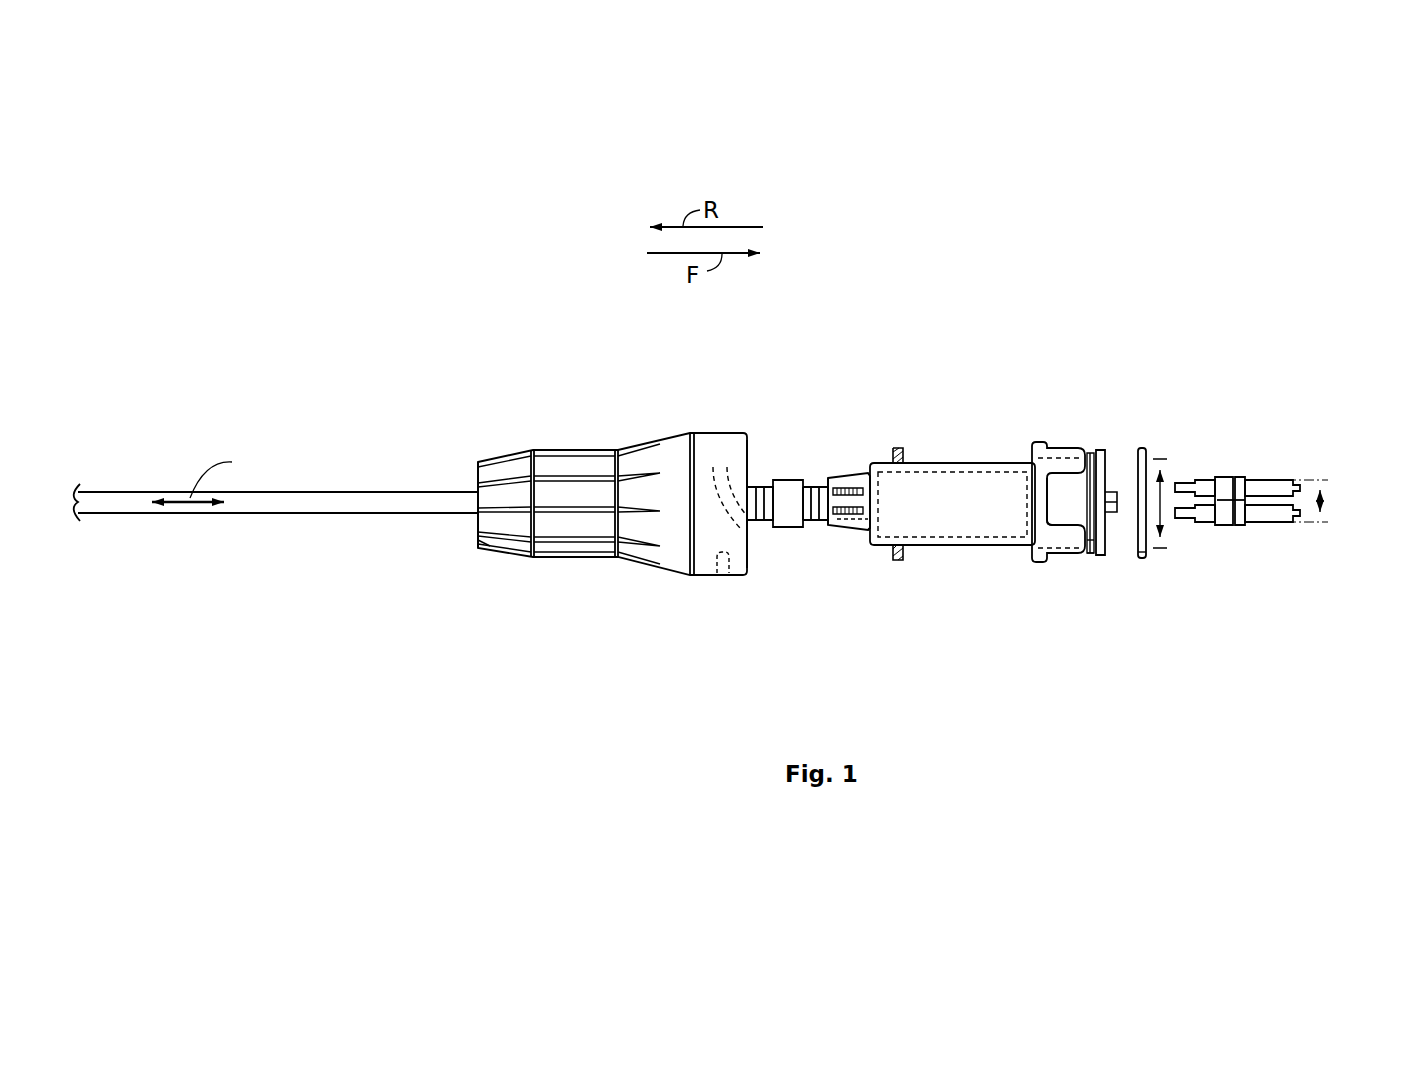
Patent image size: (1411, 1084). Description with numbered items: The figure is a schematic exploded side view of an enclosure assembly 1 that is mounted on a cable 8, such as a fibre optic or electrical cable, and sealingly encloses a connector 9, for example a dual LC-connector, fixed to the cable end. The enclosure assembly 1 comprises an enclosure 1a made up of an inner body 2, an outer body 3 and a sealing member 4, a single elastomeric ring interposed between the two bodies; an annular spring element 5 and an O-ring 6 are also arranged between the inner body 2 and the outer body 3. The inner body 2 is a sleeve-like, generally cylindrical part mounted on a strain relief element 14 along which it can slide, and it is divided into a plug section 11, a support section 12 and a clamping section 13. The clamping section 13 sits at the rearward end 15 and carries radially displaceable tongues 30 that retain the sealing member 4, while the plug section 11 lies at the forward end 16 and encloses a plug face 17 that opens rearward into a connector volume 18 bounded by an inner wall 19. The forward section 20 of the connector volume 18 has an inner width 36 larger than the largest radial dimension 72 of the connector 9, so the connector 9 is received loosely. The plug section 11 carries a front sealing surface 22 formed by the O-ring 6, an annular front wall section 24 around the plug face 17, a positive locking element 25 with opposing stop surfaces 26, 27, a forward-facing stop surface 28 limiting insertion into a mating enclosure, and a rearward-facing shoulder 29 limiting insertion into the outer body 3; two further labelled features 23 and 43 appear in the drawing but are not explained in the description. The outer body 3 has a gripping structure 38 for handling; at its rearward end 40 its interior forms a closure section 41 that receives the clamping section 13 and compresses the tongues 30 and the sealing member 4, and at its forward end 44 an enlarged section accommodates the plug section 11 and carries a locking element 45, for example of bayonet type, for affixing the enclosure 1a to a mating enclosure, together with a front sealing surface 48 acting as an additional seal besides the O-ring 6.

The enclosure assembly 1 is at (563, 363).
The enclosure 1a is at (885, 356).
The inner body 2 is at (965, 408).
The outer body 3 is at (677, 410).
The sealing member 4 is at (790, 473).
The annular spring element 5 is at (898, 448).
The O-ring 6 is at (1110, 467).
The cable 8 is at (302, 492).
The connector 9 is at (1277, 460).
The plug section 11 is at (1082, 403).
The support section 12 is at (931, 445).
The clamping section 13 is at (844, 457).
The strain relief element 14 is at (823, 490).
The rearward end 15 is at (826, 538).
The forward end 16 is at (1109, 552).
The plug face 17 is at (1104, 553).
The connector volume 18 is at (1146, 548).
The inner wall 19 is at (950, 546).
The forward section 20 is at (1062, 555).
The front sealing surface 22 is at (1146, 449).
The flange 23 is at (1096, 559).
The annular front wall section 24 is at (1099, 450).
The positive locking element 25 is at (1054, 519).
The stop surface 26 is at (1062, 483).
The stop surface 27 is at (1070, 443).
The stop surface 28 is at (1100, 550).
The shoulder 29 is at (1026, 451).
The tongues 30 is at (838, 521).
The inner width 36 is at (1166, 534).
The gripping structure 38 is at (599, 448).
The rearward end 40 is at (448, 474).
The closure section 41 is at (468, 556).
The adapter end 43 is at (862, 530).
The forward end 44 is at (725, 590).
The locking element 45 is at (742, 536).
The front sealing surface 48 is at (753, 437).
The largest radial dimension 72 is at (1325, 500).